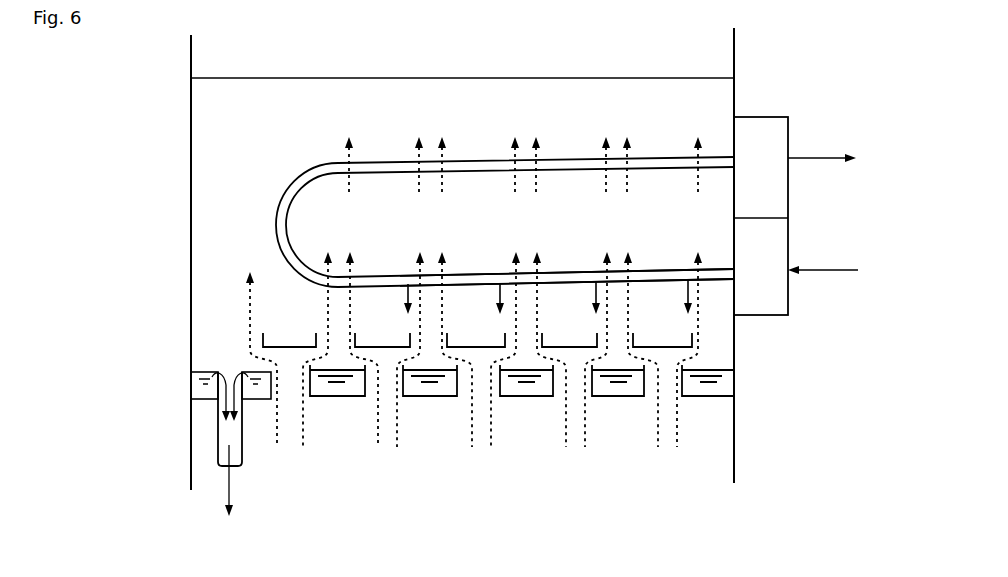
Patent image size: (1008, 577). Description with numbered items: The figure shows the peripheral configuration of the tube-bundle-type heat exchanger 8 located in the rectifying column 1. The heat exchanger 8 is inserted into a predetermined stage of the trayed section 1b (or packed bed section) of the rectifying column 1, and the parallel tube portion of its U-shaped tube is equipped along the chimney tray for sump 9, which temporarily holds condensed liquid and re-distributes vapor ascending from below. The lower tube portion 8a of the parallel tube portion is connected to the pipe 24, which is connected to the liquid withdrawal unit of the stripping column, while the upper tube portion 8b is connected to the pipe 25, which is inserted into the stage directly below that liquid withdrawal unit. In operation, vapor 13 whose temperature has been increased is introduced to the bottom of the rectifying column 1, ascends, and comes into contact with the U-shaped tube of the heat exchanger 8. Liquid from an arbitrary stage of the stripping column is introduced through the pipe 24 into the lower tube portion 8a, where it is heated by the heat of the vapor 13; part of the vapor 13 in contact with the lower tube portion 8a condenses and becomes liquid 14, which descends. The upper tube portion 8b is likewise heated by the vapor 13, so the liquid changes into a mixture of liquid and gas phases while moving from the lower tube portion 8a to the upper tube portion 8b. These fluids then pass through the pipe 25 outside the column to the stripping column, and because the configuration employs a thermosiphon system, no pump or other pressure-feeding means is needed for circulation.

The rectifying column 1 is at (182, 241).
The trayed section 1b is at (470, 70).
The tube-bundle-type heat exchanger 8 is at (762, 285).
The lower tube portion 8a is at (670, 270).
The upper tube portion 8b is at (668, 157).
The chimney tray for sump 9 is at (210, 398).
The vapor 13 is at (535, 181).
The liquid 14 is at (409, 295).
The pipe 24 is at (822, 270).
The pipe 25 is at (815, 159).